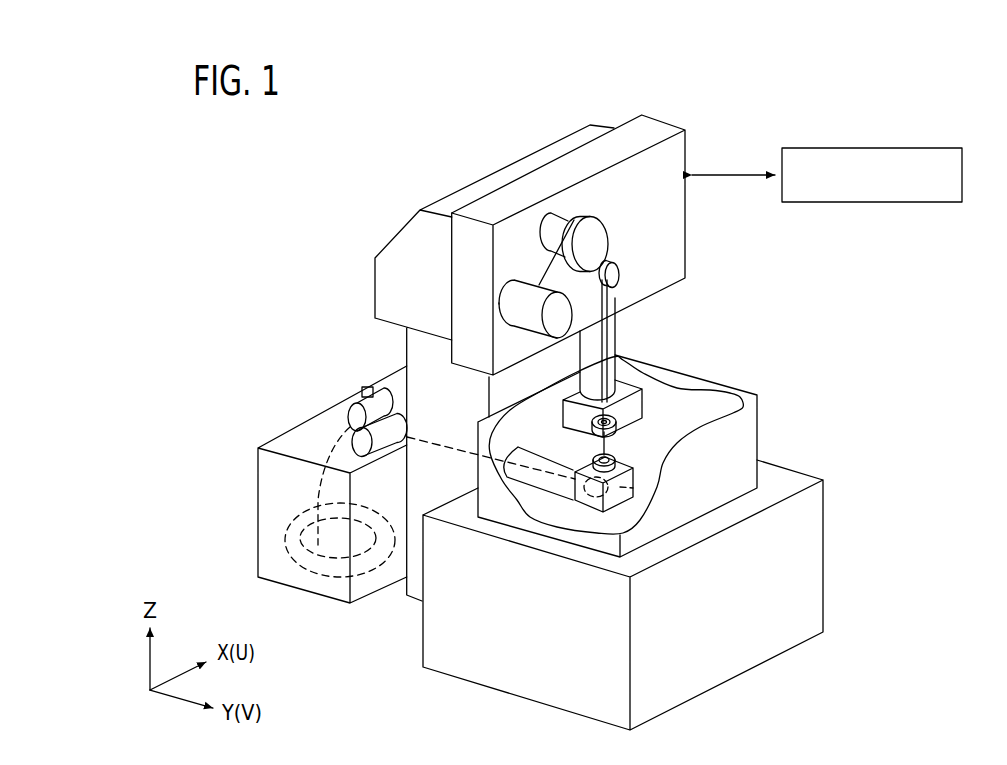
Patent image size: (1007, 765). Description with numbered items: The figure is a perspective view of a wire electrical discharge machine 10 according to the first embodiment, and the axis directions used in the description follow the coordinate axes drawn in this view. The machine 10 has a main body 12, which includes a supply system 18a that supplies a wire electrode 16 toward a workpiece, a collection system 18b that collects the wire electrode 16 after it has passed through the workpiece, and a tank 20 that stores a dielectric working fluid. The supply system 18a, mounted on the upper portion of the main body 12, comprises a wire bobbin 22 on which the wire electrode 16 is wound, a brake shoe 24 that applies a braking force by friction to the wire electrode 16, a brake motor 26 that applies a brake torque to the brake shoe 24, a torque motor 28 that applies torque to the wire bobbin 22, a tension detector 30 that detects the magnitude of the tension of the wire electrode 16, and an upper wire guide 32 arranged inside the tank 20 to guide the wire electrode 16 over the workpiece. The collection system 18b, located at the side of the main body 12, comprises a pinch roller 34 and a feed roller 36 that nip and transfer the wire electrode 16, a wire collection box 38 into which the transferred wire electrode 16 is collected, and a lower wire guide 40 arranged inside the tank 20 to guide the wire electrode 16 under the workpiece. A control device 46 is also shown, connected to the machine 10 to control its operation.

The wire electrical discharge machine 10 is at (228, 180).
The main body 12 is at (374, 240).
The wire electrode 16 is at (605, 298).
The supply system 18a is at (630, 221).
The collection system 18b is at (300, 407).
The tank 20 is at (725, 391).
The wire bobbin 22 is at (524, 290).
The brake shoe 24 is at (592, 232).
The brake motor 26 is at (552, 228).
The torque motor 28 is at (496, 297).
The tension detector 30 is at (619, 277).
The upper wire guide 32 is at (621, 389).
The pinch roller 34 is at (373, 406).
The feed roller 36 is at (388, 446).
The wire collection box 38 is at (272, 490).
The lower wire guide 40 is at (623, 487).
The control device 46 is at (897, 148).